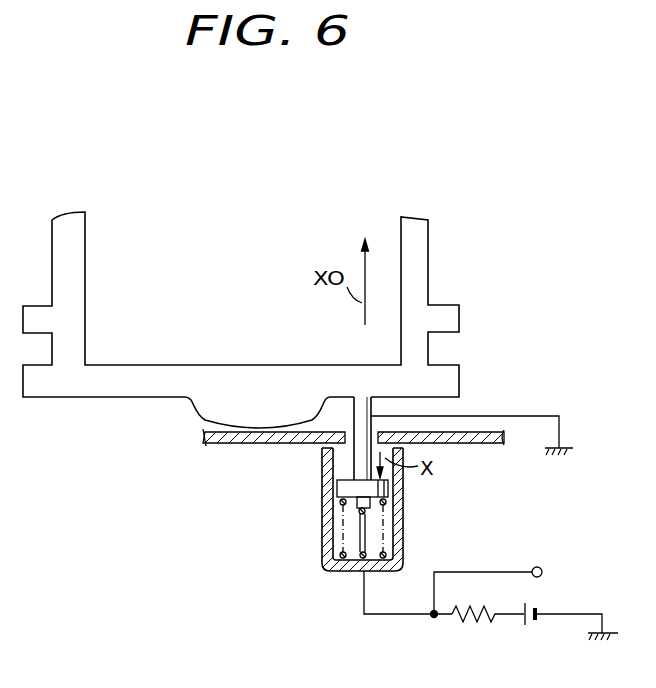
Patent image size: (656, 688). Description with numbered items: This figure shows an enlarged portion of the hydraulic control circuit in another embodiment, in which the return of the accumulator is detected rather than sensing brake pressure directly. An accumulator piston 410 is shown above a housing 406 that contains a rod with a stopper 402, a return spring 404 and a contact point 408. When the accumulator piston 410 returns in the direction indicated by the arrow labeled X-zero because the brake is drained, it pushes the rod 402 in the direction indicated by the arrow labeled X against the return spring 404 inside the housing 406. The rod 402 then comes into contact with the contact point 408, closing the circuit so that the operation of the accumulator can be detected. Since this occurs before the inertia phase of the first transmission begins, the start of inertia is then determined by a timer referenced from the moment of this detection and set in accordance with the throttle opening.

The rod with a stopper 402 is at (358, 455).
The return spring 404 is at (340, 538).
The housing 406 is at (397, 517).
The contact point 408 is at (360, 503).
The accumulator piston 410 is at (449, 243).